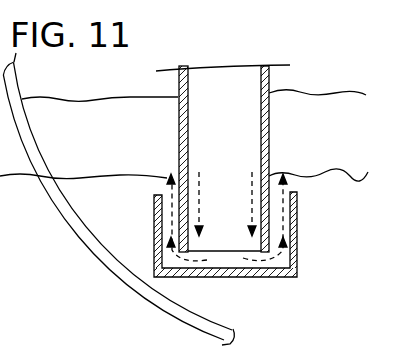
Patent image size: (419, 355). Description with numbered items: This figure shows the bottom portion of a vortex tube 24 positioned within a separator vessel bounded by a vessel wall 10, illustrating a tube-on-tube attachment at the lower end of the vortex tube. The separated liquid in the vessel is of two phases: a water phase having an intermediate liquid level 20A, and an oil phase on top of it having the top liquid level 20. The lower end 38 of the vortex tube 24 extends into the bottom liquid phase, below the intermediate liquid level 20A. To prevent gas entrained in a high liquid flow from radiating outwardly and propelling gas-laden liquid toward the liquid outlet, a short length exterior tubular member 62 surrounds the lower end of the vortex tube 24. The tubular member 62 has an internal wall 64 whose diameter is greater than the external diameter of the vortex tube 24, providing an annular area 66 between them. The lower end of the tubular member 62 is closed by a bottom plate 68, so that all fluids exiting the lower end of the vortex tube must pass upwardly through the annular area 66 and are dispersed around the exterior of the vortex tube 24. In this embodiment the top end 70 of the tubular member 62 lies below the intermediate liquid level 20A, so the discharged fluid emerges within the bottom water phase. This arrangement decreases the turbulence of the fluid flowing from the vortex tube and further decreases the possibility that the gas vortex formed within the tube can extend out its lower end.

The vessel wall 10 is at (113, 266).
The liquid level 20 is at (322, 93).
The vortex tube 24 is at (270, 128).
The intermediate liquid level 20A is at (320, 168).
The top end of tubular member 70 is at (157, 190).
The bottom plate 68 is at (218, 278).
The exterior tubular member 62 is at (297, 224).
The internal wall 64 is at (300, 255).
The annular area 66 is at (285, 190).
The lower end 38 is at (283, 254).